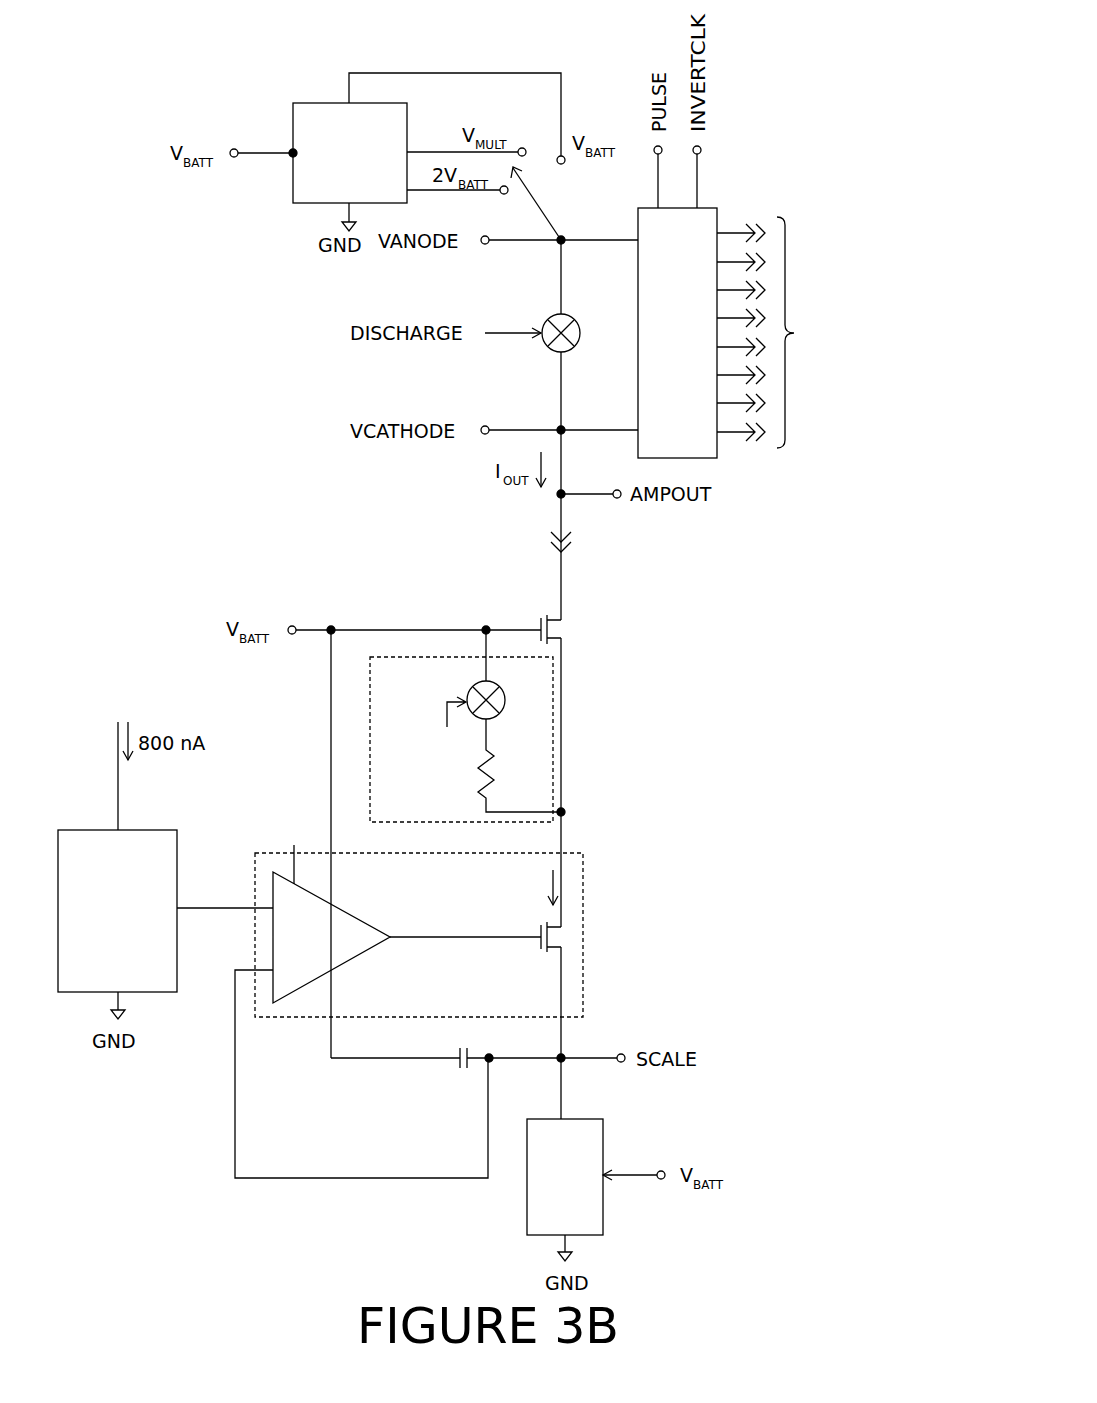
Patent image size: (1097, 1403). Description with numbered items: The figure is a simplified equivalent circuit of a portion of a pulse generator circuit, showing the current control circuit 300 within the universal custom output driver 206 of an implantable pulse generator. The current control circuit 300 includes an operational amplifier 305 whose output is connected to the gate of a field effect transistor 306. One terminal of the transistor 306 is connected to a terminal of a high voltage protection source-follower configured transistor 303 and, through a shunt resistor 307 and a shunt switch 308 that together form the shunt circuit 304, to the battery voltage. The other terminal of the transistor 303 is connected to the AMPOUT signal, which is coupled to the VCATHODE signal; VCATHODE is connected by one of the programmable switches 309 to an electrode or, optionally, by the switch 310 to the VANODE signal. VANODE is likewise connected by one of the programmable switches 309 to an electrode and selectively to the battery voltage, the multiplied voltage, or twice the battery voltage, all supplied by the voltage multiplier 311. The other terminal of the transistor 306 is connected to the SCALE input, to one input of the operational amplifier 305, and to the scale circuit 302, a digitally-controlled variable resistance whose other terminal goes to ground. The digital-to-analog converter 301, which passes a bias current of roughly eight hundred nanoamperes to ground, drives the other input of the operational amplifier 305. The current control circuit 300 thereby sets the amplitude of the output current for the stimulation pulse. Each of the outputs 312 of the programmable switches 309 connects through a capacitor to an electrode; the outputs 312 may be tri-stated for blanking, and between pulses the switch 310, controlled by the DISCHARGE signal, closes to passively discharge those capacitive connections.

The universal custom output driver 206 is at (190, 1137).
The current control circuit 300 is at (437, 919).
The digital-to-analog converter 301 is at (100, 932).
The scale circuit 302 is at (546, 1196).
The high voltage protection source-follower configured transistor 303 is at (551, 615).
The shunt circuit 304 is at (419, 769).
The operational amplifier 305 is at (334, 949).
The field effect transistor 306 is at (551, 947).
The shunt resistor 307 is at (494, 762).
The shunt switch 308 is at (500, 690).
The programmable switches 309 is at (704, 313).
The switch 310 is at (575, 320).
The voltage multiplier 311 is at (333, 174).
The outputs 312 is at (781, 332).